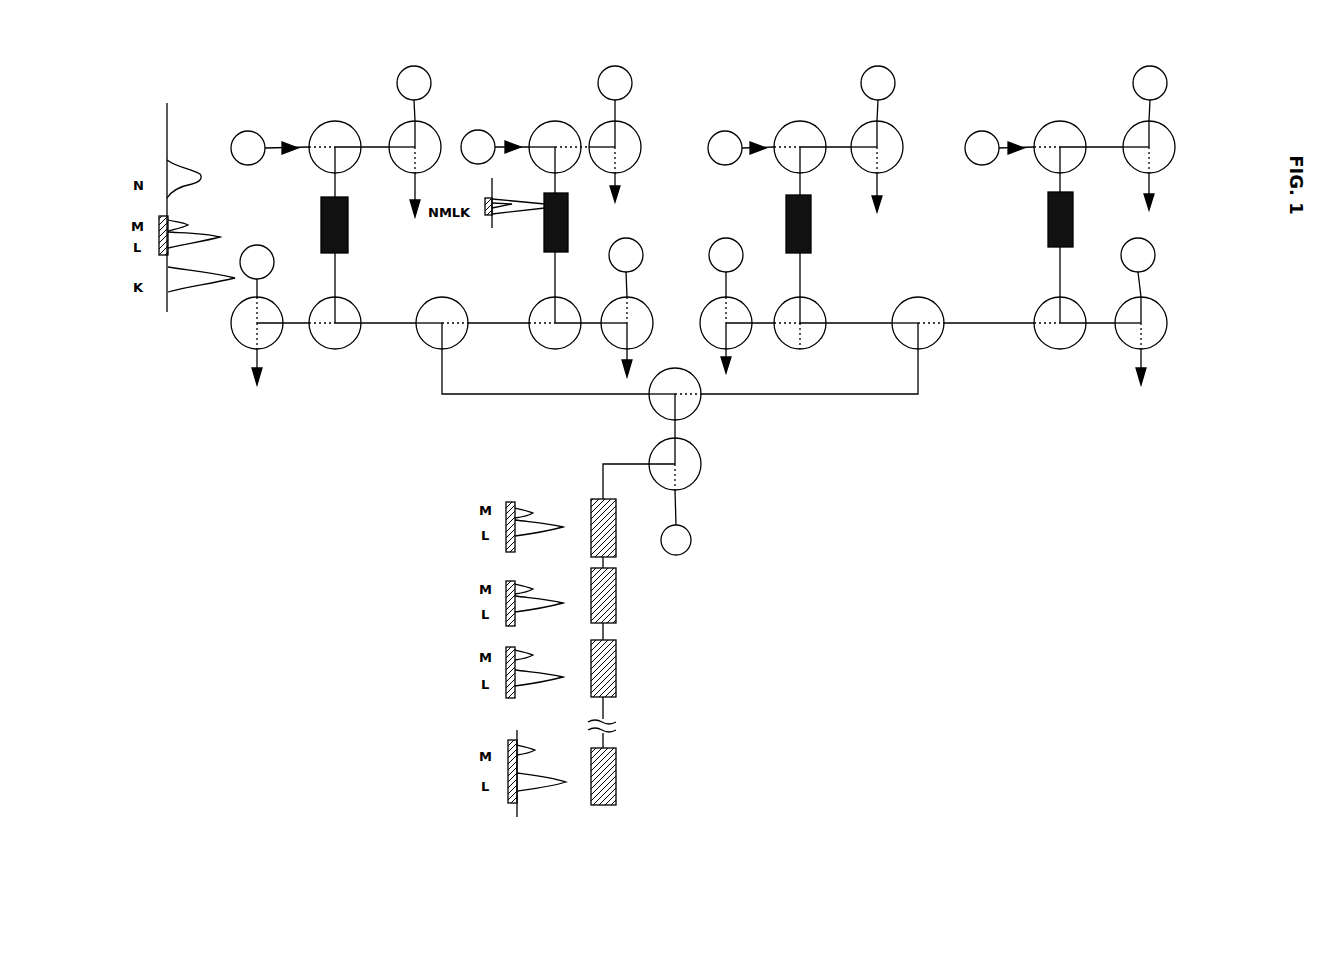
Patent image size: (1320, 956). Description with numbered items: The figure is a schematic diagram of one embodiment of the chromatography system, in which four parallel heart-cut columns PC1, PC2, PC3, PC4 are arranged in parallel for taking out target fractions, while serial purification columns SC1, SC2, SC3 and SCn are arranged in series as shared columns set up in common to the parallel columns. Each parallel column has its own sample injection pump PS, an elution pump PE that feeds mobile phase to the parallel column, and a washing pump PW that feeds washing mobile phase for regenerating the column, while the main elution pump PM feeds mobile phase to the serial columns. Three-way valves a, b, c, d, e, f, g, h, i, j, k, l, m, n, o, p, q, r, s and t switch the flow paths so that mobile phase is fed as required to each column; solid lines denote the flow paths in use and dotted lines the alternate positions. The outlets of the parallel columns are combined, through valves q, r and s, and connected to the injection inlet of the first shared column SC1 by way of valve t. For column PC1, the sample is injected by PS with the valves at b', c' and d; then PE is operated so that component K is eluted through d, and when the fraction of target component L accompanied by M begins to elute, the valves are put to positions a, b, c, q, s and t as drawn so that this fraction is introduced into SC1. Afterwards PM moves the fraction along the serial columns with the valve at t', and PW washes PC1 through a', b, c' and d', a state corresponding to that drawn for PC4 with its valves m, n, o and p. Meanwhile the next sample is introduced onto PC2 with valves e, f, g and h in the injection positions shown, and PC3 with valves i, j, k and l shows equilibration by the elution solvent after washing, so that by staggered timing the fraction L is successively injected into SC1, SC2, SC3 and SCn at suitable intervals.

The 3-way valve a is at (415, 163).
The 3-way valve b is at (349, 153).
The 3-way valve c is at (362, 317).
The 3-way valve d is at (270, 336).
The 3-way valve e is at (617, 158).
The 3-way valve f is at (559, 149).
The 3-way valve g is at (565, 318).
The 3-way valve h is at (629, 336).
The 3-way valve i is at (812, 148).
The 3-way valve j is at (877, 164).
The 3-way valve k is at (833, 316).
The 3-way valve l is at (737, 331).
The 3-way valve m is at (1150, 162).
The 3-way valve n is at (1078, 150).
The 3-way valve o is at (1074, 316).
The 3-way valve p is at (1144, 337).
The 3-way valve q is at (532, 340).
The 3-way valve r is at (867, 342).
The 3-way valve s is at (675, 395).
The 3-way valve t is at (655, 479).
The parallel column PC1 is at (318, 247).
The parallel column PC2 is at (573, 245).
The parallel column PC3 is at (773, 246).
The parallel column PC4 is at (1039, 244).
The serial column SC1 is at (619, 533).
The serial column SC2 is at (620, 604).
The serial column SC3 is at (619, 694).
The serial column SCn is at (624, 776).
The sample injection pump PS is at (632, 147).
The parallel column elution pump PE is at (782, 93).
The washing pump PW is at (697, 267).
The main elution pump PM is at (676, 540).